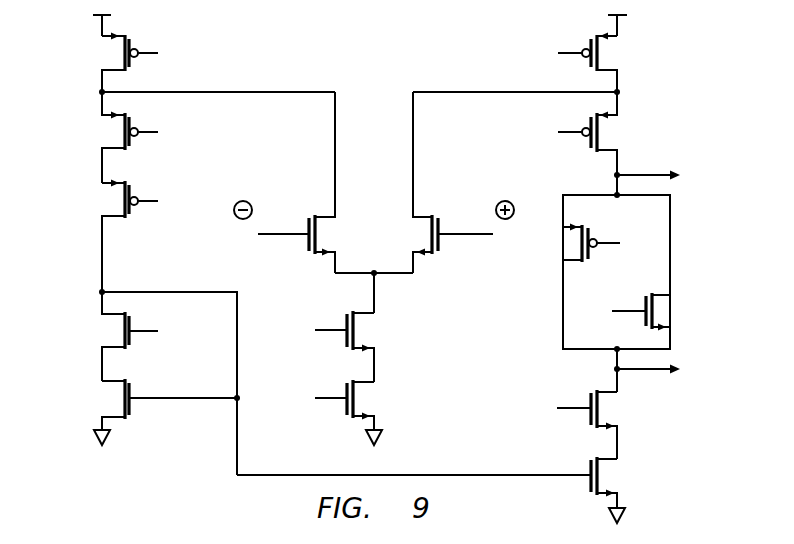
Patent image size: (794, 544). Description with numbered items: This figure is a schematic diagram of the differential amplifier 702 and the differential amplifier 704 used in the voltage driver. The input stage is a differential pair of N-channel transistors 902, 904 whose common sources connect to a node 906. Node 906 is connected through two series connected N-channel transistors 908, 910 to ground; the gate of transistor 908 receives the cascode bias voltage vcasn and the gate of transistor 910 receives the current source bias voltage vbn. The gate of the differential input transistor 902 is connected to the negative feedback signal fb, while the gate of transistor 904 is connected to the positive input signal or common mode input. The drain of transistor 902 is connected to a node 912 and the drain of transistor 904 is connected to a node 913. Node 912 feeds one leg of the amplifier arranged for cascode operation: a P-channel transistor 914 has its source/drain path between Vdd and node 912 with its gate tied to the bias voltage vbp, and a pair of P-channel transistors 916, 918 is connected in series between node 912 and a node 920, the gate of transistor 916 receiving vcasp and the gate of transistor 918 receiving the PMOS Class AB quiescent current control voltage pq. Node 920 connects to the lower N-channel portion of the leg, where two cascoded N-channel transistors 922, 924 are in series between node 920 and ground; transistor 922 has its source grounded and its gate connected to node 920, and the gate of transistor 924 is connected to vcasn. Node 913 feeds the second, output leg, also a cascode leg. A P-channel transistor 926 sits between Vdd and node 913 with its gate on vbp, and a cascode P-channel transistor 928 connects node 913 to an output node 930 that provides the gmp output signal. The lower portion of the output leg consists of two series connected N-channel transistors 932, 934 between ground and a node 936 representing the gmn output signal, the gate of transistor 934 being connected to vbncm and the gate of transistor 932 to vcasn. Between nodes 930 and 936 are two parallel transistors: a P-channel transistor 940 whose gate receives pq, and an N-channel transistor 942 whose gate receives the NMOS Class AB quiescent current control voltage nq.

The differential amplifier 702 is at (80, 464).
The differential amplifier 704 is at (176, 474).
The N-channel differential input transistor 902 is at (304, 248).
The N-channel differential input transistor 904 is at (443, 248).
The common source node 906 is at (378, 278).
The N-channel transistor 908 is at (340, 348).
The N-channel transistor 910 is at (340, 416).
The node 912 is at (100, 91).
The node 913 is at (620, 91).
The P-channel transistor 914 is at (134, 38).
The P-channel transistor 916 is at (133, 150).
The P-channel transistor 918 is at (133, 218).
The node 920 is at (128, 283).
The N-channel transistor 922 is at (133, 418).
The N-channel transistor 924 is at (133, 349).
The P-channel transistor 926 is at (587, 38).
The cascode P-channel transistor 928 is at (587, 151).
The output node 930 is at (622, 175).
The N-channel transistor 932 is at (585, 428).
The N-channel transistor 934 is at (585, 492).
The node 936 is at (622, 373).
The P-channel transistor 940 is at (592, 228).
The N-channel transistor 942 is at (642, 297).